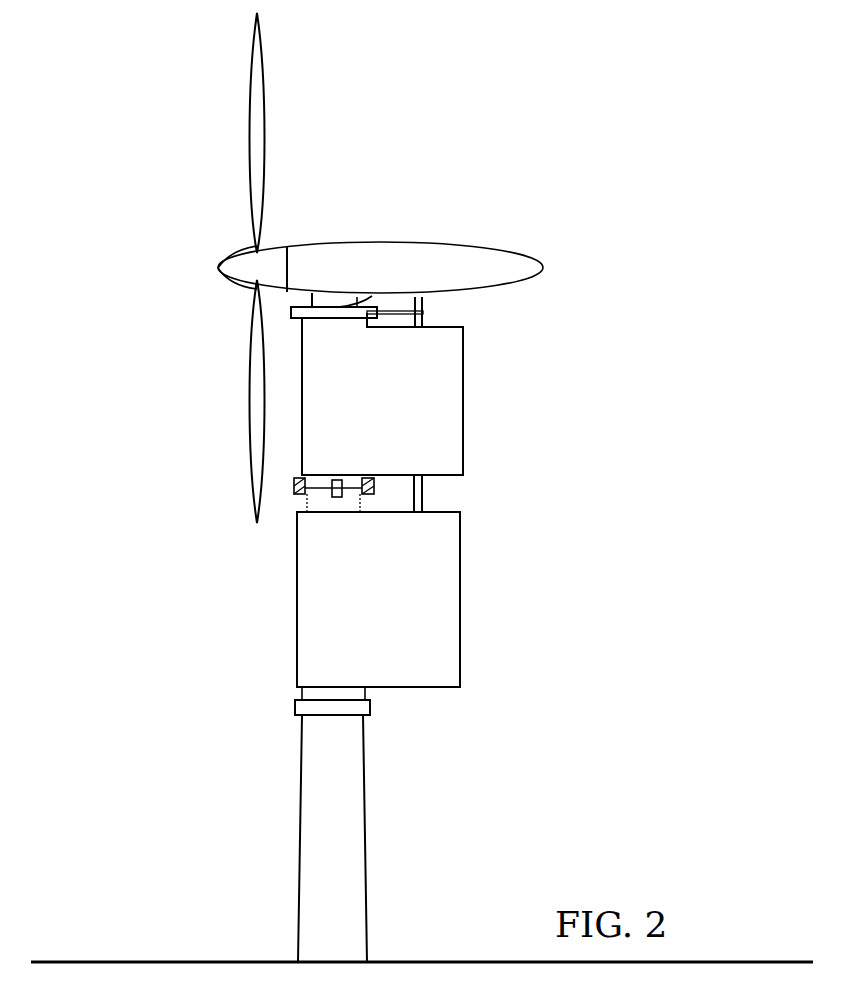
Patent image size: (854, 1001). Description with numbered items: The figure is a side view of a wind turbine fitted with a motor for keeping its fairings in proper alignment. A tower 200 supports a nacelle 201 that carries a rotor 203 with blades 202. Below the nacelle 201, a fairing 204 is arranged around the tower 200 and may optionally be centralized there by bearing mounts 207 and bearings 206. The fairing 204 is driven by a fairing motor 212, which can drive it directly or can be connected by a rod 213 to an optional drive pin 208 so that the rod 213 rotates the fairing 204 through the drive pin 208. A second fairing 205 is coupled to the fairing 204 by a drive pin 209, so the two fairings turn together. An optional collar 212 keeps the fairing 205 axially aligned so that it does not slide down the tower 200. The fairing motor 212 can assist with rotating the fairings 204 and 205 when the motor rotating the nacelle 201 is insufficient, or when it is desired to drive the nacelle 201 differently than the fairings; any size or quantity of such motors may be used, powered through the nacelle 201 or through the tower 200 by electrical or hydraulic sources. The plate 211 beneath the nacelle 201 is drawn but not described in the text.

The tower 200 is at (368, 852).
The nacelle 201 is at (553, 267).
The blades 202 is at (248, 455).
The rotor 203 is at (233, 280).
The fairing 204 is at (469, 400).
The fairing 205 is at (464, 596).
The bearings 206 is at (304, 480).
The bearing mounts 207 is at (365, 496).
The drive pin 208 is at (428, 318).
The drive pin 209 is at (428, 492).
The mounting plate 211 is at (314, 304).
The fairing motor 212 is at (384, 291).
The rod 213 is at (403, 306).